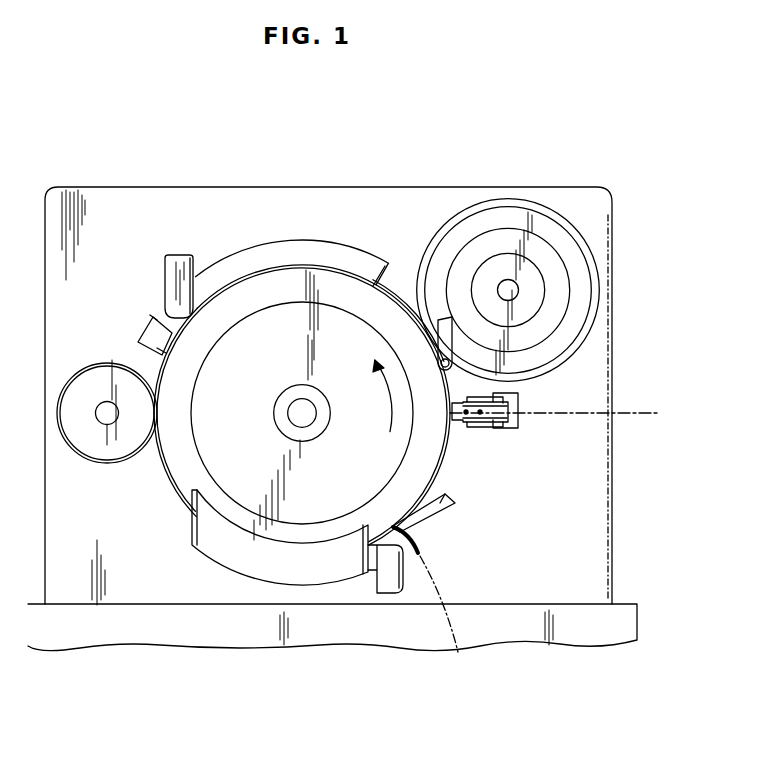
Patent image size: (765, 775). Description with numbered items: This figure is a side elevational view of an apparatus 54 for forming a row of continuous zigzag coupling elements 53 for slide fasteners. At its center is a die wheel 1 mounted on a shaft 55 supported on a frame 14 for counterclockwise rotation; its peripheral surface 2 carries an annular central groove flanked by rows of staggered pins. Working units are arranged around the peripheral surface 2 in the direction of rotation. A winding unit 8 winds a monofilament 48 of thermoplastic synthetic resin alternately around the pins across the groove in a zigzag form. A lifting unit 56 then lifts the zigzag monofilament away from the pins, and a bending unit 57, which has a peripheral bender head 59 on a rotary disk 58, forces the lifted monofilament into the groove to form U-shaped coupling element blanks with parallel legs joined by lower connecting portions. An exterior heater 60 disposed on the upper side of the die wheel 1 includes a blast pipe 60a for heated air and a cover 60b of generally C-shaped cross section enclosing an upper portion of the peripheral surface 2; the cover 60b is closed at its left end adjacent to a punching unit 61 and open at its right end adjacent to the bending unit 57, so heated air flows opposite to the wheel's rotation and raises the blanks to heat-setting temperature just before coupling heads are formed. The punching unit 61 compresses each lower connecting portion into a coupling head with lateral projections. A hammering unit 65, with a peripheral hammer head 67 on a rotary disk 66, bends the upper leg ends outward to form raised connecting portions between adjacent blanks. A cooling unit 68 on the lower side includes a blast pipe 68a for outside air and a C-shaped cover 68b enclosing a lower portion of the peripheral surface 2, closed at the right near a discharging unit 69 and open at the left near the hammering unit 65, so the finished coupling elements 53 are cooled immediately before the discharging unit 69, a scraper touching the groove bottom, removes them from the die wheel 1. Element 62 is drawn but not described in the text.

The die wheel 1 is at (178, 468).
The peripheral surface 2 is at (436, 474).
The winding unit 8 is at (459, 420).
The frame 14 is at (605, 561).
The monofilament 48 is at (585, 410).
The zigzag coupling elements 53 is at (422, 543).
The apparatus 54 is at (387, 248).
The shaft 55 is at (310, 410).
The lifting unit 56 is at (442, 351).
The bending unit 57 is at (572, 258).
The rotary disk 58 is at (547, 220).
The bender head 59 is at (508, 198).
The exterior heater 60 is at (336, 241).
The blast pipe 60a is at (186, 257).
The cover 60b is at (243, 258).
The punching unit 61 is at (148, 313).
The pressing member 62 is at (162, 355).
The hammering unit 65 is at (108, 462).
The rotary disk 66 is at (80, 368).
The hammer head 67 is at (78, 457).
The cooling unit 68 is at (202, 550).
The blast pipe 68a is at (384, 590).
The cover 68b is at (300, 584).
The discharging unit 69 is at (447, 513).